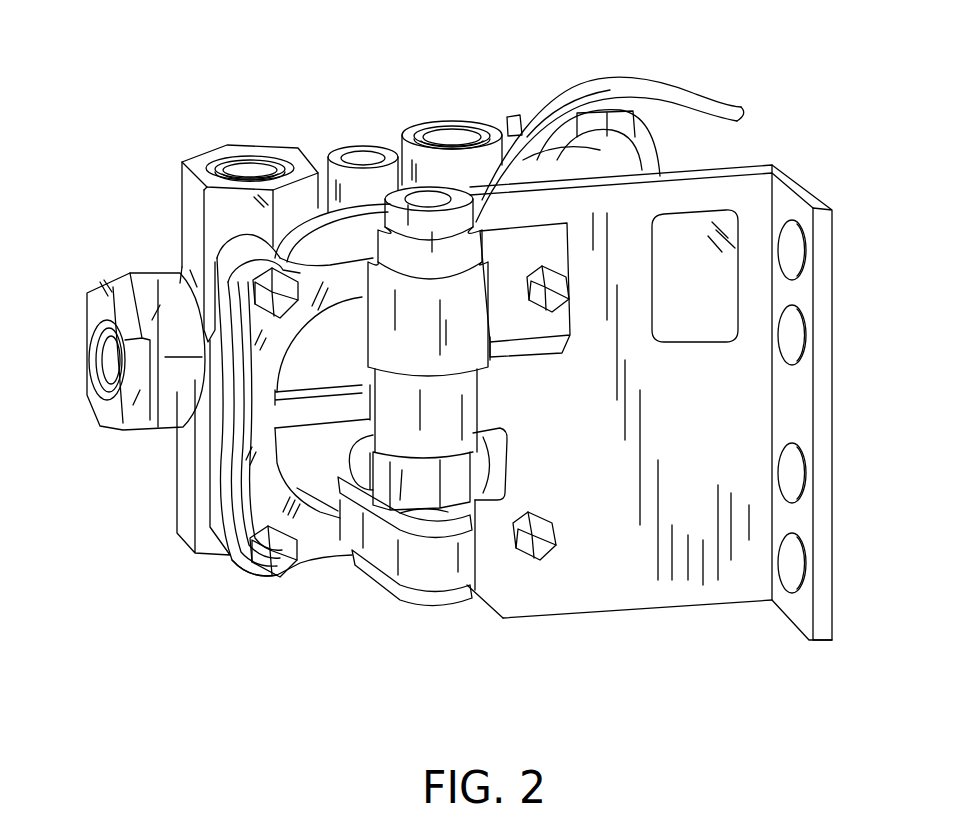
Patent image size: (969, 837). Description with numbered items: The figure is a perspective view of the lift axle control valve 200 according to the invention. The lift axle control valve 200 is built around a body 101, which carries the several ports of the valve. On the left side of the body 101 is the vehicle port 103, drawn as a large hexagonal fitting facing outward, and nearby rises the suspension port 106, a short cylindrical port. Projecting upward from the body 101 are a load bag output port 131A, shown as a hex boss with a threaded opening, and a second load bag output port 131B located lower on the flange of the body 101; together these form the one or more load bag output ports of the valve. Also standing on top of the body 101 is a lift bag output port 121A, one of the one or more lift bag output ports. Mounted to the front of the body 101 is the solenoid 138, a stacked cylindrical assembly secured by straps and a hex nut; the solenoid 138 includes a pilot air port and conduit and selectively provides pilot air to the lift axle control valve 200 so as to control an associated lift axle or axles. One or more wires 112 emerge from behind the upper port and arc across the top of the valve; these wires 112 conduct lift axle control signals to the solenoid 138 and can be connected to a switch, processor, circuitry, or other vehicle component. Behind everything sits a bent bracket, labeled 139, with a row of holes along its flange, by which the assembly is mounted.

The body 101 is at (177, 234).
The vehicle port 103 is at (96, 395).
The suspension port 106 is at (354, 144).
The wires 112 is at (696, 86).
The lift bag output port 121A is at (437, 120).
The load bag output port 131A is at (243, 143).
The load bag output port 131B is at (207, 568).
The solenoid 138 is at (480, 404).
The mounting bracket 139 is at (833, 378).
The lift axle control valve 200 is at (315, 650).